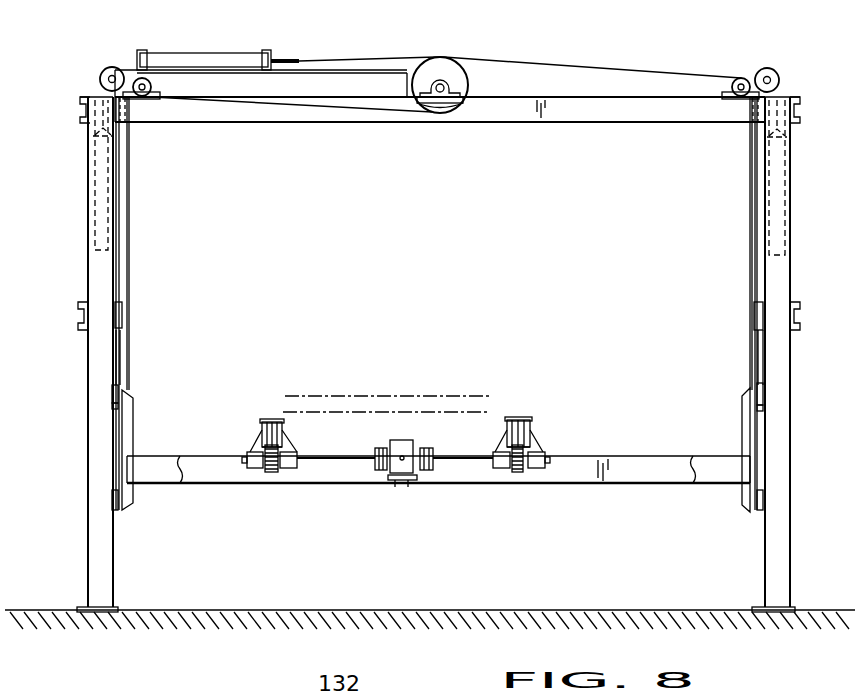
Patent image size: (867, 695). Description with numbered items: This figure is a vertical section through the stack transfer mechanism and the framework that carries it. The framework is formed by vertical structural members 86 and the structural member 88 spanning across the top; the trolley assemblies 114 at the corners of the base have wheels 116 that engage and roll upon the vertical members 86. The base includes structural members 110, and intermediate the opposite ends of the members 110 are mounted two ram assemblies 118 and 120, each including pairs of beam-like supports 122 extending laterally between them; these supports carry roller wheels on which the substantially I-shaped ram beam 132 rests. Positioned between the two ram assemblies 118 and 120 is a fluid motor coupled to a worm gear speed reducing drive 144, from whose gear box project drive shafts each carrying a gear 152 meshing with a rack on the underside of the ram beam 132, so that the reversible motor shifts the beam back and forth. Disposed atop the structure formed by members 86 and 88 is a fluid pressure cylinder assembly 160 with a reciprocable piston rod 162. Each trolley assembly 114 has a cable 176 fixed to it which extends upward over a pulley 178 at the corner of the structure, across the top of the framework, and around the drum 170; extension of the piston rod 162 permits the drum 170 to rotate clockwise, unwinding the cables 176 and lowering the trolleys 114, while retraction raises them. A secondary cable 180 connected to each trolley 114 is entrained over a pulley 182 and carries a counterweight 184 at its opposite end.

The vertical structural member 86 is at (93, 430).
The structural member 88 is at (528, 110).
The structural member 110 is at (563, 473).
The trolley assembly 114 is at (127, 438).
The wheel 116 is at (113, 397).
The ram assembly 118 is at (291, 443).
The ram assembly 120 is at (540, 436).
The beam-like support 122 is at (250, 452).
The ram beam 132 is at (272, 419).
The worm gear speed reducing drive 144 is at (407, 478).
The gear 152 is at (272, 473).
The fluid pressure cylinder assembly 160 is at (211, 53).
The piston rod 162 is at (302, 39).
The drum 170 is at (441, 63).
The cable 176 is at (593, 66).
The pulley 178 is at (140, 79).
The secondary cable 180 is at (125, 270).
The pulley 182 is at (107, 72).
The counterweight 184 is at (107, 202).